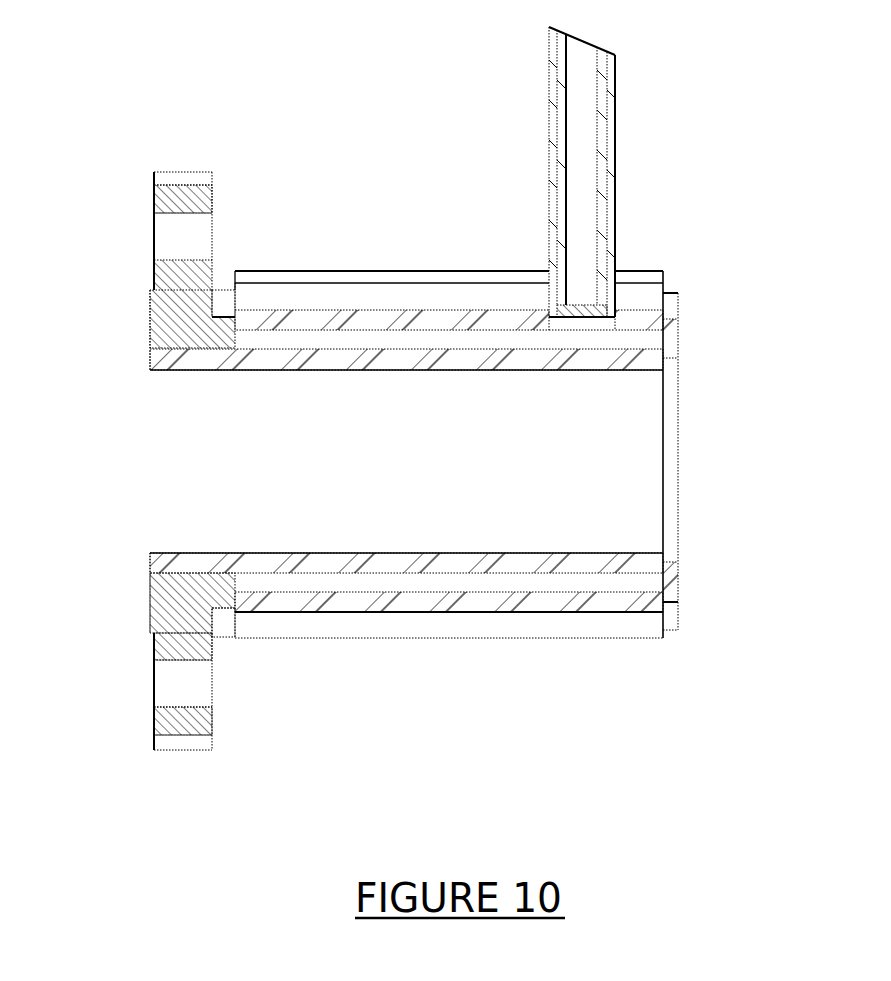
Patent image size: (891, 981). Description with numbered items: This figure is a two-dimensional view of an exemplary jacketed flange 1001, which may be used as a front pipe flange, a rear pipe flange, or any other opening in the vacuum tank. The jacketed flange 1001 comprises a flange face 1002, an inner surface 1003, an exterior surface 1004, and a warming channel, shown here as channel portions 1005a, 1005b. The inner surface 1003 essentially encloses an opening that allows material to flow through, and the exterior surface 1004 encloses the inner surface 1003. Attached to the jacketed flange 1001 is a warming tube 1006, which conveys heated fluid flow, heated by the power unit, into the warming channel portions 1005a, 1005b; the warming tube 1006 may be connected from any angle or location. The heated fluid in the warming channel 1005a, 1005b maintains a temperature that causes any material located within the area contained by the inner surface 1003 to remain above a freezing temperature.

The jacketed flange 1001 is at (134, 271).
The flange face 1002 is at (129, 651).
The inner surface 1003 is at (653, 365).
The exterior surface 1004 is at (437, 413).
The warming channel 1005a is at (449, 647).
The warming channel 1005b is at (449, 227).
The warming tube 1006 is at (653, 172).